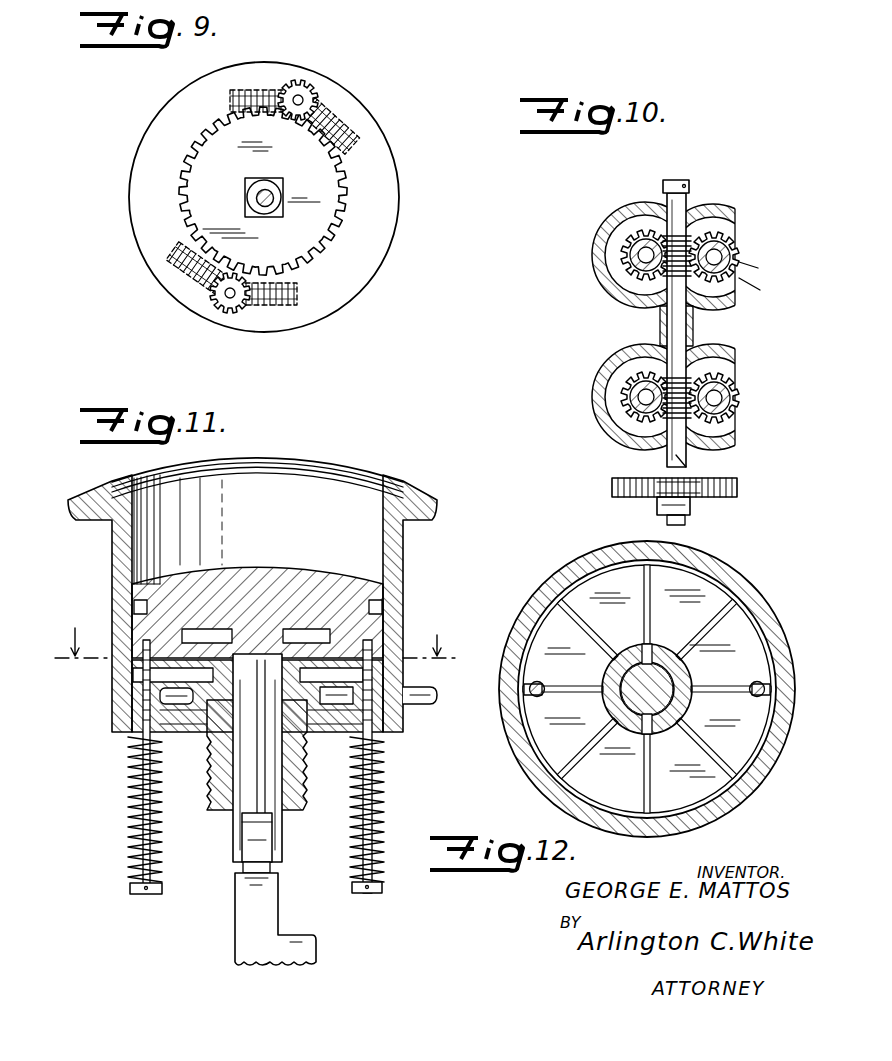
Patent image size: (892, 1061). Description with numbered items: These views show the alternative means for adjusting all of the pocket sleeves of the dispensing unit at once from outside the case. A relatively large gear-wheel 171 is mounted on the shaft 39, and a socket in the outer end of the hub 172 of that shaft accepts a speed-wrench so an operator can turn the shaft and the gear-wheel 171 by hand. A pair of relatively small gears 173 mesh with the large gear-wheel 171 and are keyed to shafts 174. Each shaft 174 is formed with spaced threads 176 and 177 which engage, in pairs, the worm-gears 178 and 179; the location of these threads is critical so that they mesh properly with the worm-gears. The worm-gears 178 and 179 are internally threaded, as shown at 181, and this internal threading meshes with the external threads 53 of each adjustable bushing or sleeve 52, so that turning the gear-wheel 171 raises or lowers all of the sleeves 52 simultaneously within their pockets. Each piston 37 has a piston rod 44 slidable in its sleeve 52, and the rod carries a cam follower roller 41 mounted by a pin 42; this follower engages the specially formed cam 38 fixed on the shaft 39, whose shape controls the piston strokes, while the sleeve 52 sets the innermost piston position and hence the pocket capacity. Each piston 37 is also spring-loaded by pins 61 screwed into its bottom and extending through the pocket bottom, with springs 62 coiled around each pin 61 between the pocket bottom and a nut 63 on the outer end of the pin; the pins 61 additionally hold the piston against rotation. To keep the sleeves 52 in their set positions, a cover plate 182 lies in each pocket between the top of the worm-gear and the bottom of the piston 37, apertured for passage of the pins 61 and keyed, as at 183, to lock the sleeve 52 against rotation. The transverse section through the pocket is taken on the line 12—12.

In FIG. 9, the gear-wheel 171 is at (341, 206).
In FIG. 10, the gear-wheel 171 is at (740, 490).
In FIG. 9, the hub 172 is at (261, 181).
In FIG. 10, the hub 172 is at (693, 512).
In FIG. 9, the shaft 39 is at (271, 212).
In FIG. 9, the small gears 173 is at (316, 85).
In FIG. 9, the shafts 174 is at (305, 100).
In FIG. 10, the shafts 174 is at (690, 462).
In FIG. 11, the shafts 174 is at (415, 700).
In FIG. 9, the worm-gear 178 is at (270, 92).
In FIG. 10, the worm-gear 178 is at (735, 414).
In FIG. 10, the worm-gear 179 is at (730, 253).
In FIG. 11, the worm-gear 179 is at (183, 702).
In FIG. 10, the thread 177 is at (700, 238).
In FIG. 10, the thread 176 is at (700, 382).
In FIG. 11, the piston 37 is at (292, 569).
In FIG. 11, the section line 12 is at (255, 630).
In FIG. 11, the cover plate 182 is at (213, 672).
In FIG. 11, the internal threading 181 is at (190, 707).
In FIG. 11, the external threads 53 is at (296, 772).
In FIG. 12, the external threads 53 is at (601, 709).
In FIG. 11, the piston rod 44 is at (262, 793).
In FIG. 12, the piston rod 44 is at (652, 684).
In FIG. 11, the adjustable bushing or sleeve 52 is at (283, 810).
In FIG. 12, the adjustable bushing or sleeve 52 is at (678, 705).
In FIG. 11, the pin 42 is at (240, 845).
In FIG. 11, the cam follower 41 is at (270, 868).
In FIG. 11, the cam 38 is at (248, 905).
In FIG. 11, the pin 61 is at (140, 800).
In FIG. 12, the pin 61 is at (770, 689).
In FIG. 11, the spring 62 is at (135, 822).
In FIG. 11, the nut 63 is at (138, 895).
In FIG. 12, the key 183 is at (655, 648).